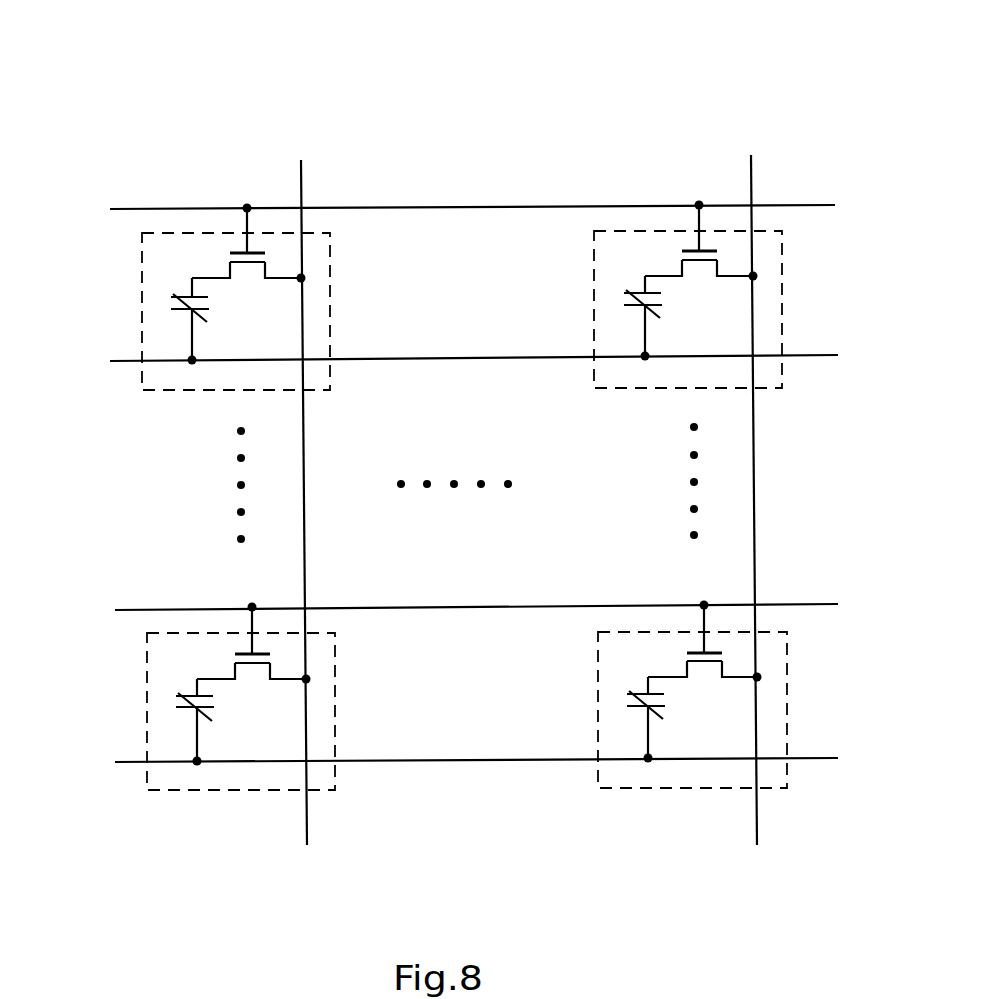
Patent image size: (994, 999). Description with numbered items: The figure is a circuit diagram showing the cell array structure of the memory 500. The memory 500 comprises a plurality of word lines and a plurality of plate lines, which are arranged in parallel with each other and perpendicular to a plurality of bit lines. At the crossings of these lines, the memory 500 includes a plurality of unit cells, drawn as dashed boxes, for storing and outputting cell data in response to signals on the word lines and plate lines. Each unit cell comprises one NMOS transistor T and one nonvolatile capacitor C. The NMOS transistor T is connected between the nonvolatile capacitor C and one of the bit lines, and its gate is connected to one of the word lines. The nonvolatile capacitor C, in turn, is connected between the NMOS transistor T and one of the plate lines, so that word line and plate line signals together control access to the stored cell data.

The memory 500 is at (770, 78).